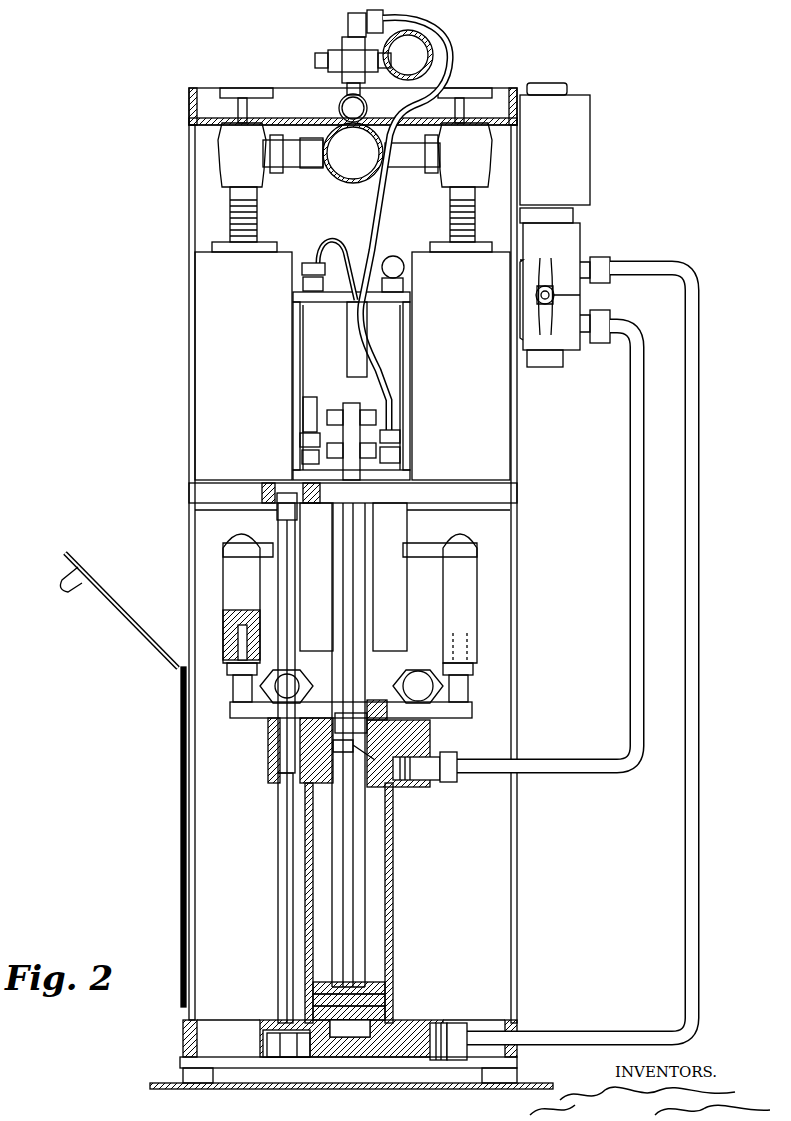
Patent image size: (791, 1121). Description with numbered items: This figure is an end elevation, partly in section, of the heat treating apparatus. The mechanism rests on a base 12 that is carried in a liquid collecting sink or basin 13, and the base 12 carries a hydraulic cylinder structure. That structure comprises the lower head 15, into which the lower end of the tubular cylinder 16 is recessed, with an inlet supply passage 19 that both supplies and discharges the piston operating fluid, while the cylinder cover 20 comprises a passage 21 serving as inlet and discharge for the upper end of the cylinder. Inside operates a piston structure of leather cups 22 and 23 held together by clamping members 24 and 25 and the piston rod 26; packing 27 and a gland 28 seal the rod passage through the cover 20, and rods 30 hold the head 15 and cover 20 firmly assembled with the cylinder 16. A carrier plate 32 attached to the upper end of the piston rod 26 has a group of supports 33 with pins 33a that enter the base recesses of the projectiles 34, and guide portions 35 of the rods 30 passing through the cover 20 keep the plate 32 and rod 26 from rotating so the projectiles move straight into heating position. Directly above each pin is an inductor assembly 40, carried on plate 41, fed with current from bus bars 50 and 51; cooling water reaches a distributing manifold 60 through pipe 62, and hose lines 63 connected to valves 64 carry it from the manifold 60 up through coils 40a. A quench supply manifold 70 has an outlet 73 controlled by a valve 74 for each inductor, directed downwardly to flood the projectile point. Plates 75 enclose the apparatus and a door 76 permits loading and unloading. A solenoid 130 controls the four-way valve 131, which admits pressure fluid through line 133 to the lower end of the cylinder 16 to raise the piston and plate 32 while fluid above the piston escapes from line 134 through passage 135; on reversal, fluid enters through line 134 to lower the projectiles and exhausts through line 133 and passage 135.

The base 12 is at (517, 1063).
The liquid collecting sink or basin 13 is at (280, 1090).
The lower head 15 is at (265, 1025).
The tubular cylinder 16 is at (392, 932).
The inlet supply passage 19 is at (433, 1030).
The cylinder cover 20 is at (430, 748).
The passage 21 is at (420, 775).
The leather cup 22 is at (385, 997).
The leather cup 23 is at (385, 1010).
The clamping member 24 is at (385, 985).
The clamping member 25 is at (370, 1028).
The piston rod 26 is at (360, 925).
The packing 27 is at (338, 752).
The gland 28 is at (375, 722).
The rods 30 is at (280, 860).
The carrier plate 32 is at (458, 710).
The supports 33 is at (235, 687).
The pins 33a is at (235, 655).
The projectiles 34 is at (232, 590).
The guide portions 35 is at (294, 600).
The inductor assembly 40 is at (212, 411).
The coils 40a is at (495, 403).
The plate 41 is at (500, 495).
The bus bar 50 is at (347, 405).
The bus bar 51 is at (356, 357).
The distributing header or manifold 60 is at (339, 108).
The pipe 62 is at (433, 53).
The rubber hose line 63 is at (375, 365).
The valve 64 is at (340, 45).
The quench supply manifold 70 is at (345, 182).
The outlet 73 is at (300, 168).
The valve 74 is at (236, 151).
The plate 75 is at (180, 787).
The door 76 is at (135, 622).
The solenoid 130 is at (585, 162).
The four-way valve 131 is at (570, 258).
The line 133 is at (695, 535).
The line 134 is at (630, 520).
The passage 135 is at (557, 295).